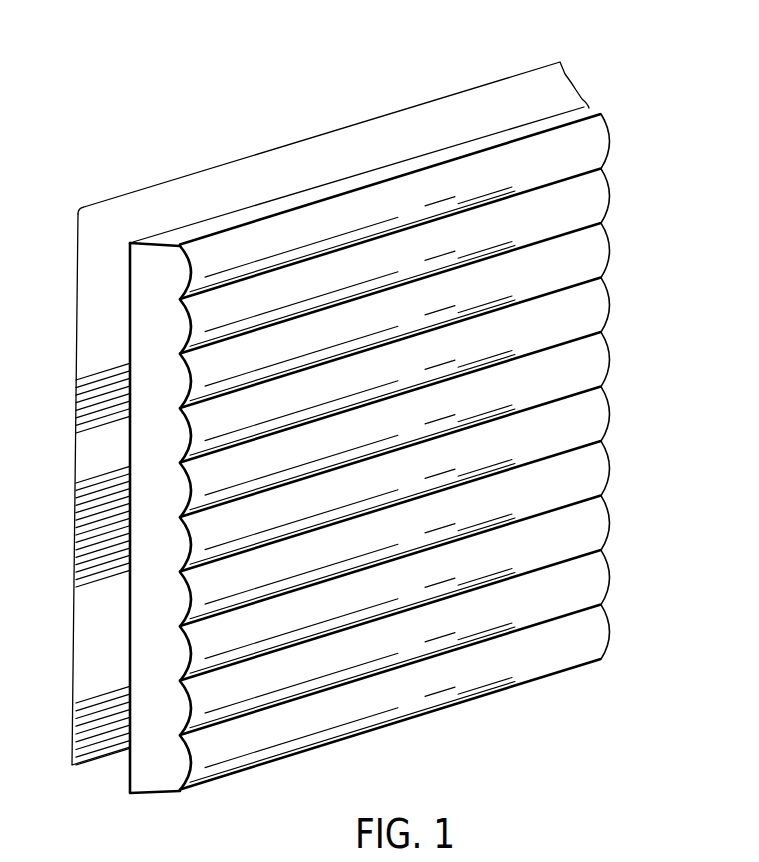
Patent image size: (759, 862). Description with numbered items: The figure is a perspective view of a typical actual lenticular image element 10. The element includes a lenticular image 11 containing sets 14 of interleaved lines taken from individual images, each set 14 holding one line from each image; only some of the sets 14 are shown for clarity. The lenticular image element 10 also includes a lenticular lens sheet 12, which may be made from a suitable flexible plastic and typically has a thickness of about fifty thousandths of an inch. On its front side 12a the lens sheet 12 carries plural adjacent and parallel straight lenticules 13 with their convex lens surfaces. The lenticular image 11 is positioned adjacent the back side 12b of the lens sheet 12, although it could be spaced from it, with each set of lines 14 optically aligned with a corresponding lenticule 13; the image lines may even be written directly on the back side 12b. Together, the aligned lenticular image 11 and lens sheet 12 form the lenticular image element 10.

The lenticular image element 10 is at (452, 79).
The lenticular image 11 is at (102, 212).
The lenticular lens sheet 12 is at (245, 245).
The front side 12a is at (217, 768).
The back side 12b is at (121, 782).
The lenticules 13 is at (283, 623).
The sets of interleaved lines 14 is at (70, 380).